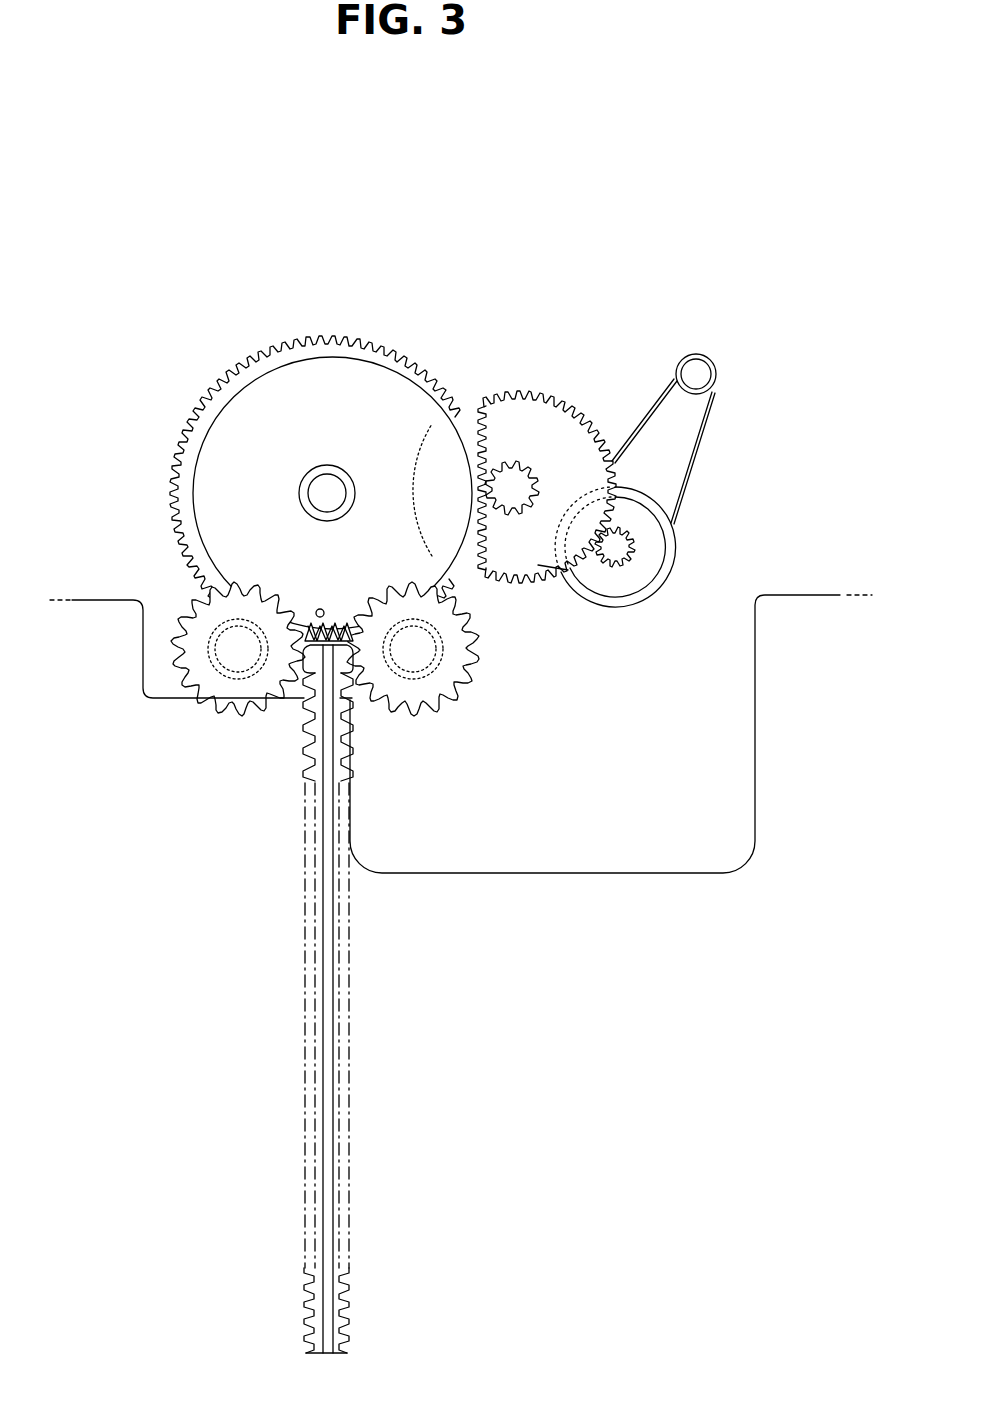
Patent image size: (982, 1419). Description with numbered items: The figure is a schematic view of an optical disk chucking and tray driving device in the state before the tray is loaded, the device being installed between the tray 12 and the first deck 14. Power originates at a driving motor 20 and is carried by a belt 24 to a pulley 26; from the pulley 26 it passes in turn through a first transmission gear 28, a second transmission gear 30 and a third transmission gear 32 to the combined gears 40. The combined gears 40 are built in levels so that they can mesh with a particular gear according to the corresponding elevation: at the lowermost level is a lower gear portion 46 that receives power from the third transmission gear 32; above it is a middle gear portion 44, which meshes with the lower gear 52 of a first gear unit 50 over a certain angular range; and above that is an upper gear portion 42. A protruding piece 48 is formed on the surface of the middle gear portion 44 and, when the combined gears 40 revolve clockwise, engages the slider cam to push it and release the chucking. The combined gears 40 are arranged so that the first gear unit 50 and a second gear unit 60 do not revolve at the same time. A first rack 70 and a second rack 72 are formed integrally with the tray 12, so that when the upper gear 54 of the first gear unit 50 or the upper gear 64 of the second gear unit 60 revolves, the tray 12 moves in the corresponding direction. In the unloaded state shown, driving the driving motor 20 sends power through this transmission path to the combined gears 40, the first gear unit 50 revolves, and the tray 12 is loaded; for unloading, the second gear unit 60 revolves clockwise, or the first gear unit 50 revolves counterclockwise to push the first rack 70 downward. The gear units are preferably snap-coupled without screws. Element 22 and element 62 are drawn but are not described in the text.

The tray 12 is at (812, 564).
The first deck 14 is at (623, 815).
The driving motor 20 is at (714, 363).
The drive gear 22 is at (602, 402).
The belt 24 is at (697, 440).
The pulley 26 is at (670, 545).
The first transmission gear 28 is at (633, 552).
The second transmission gear 30 is at (568, 570).
The third transmission gear 32 is at (525, 458).
The combined gears 40 is at (179, 384).
The upper gear portion 42 is at (190, 533).
The middle gear portion 44 is at (458, 575).
The lower gear portion 46 is at (333, 338).
The protruding piece 48 is at (320, 609).
The first gear unit 50 is at (460, 725).
The lower gear 52 is at (427, 643).
The upper gear 54 is at (462, 652).
The second gear unit 60 is at (153, 666).
The pinion 62 is at (227, 655).
The upper gear 64 is at (230, 707).
The first rack 70 is at (345, 775).
The second rack 72 is at (308, 755).